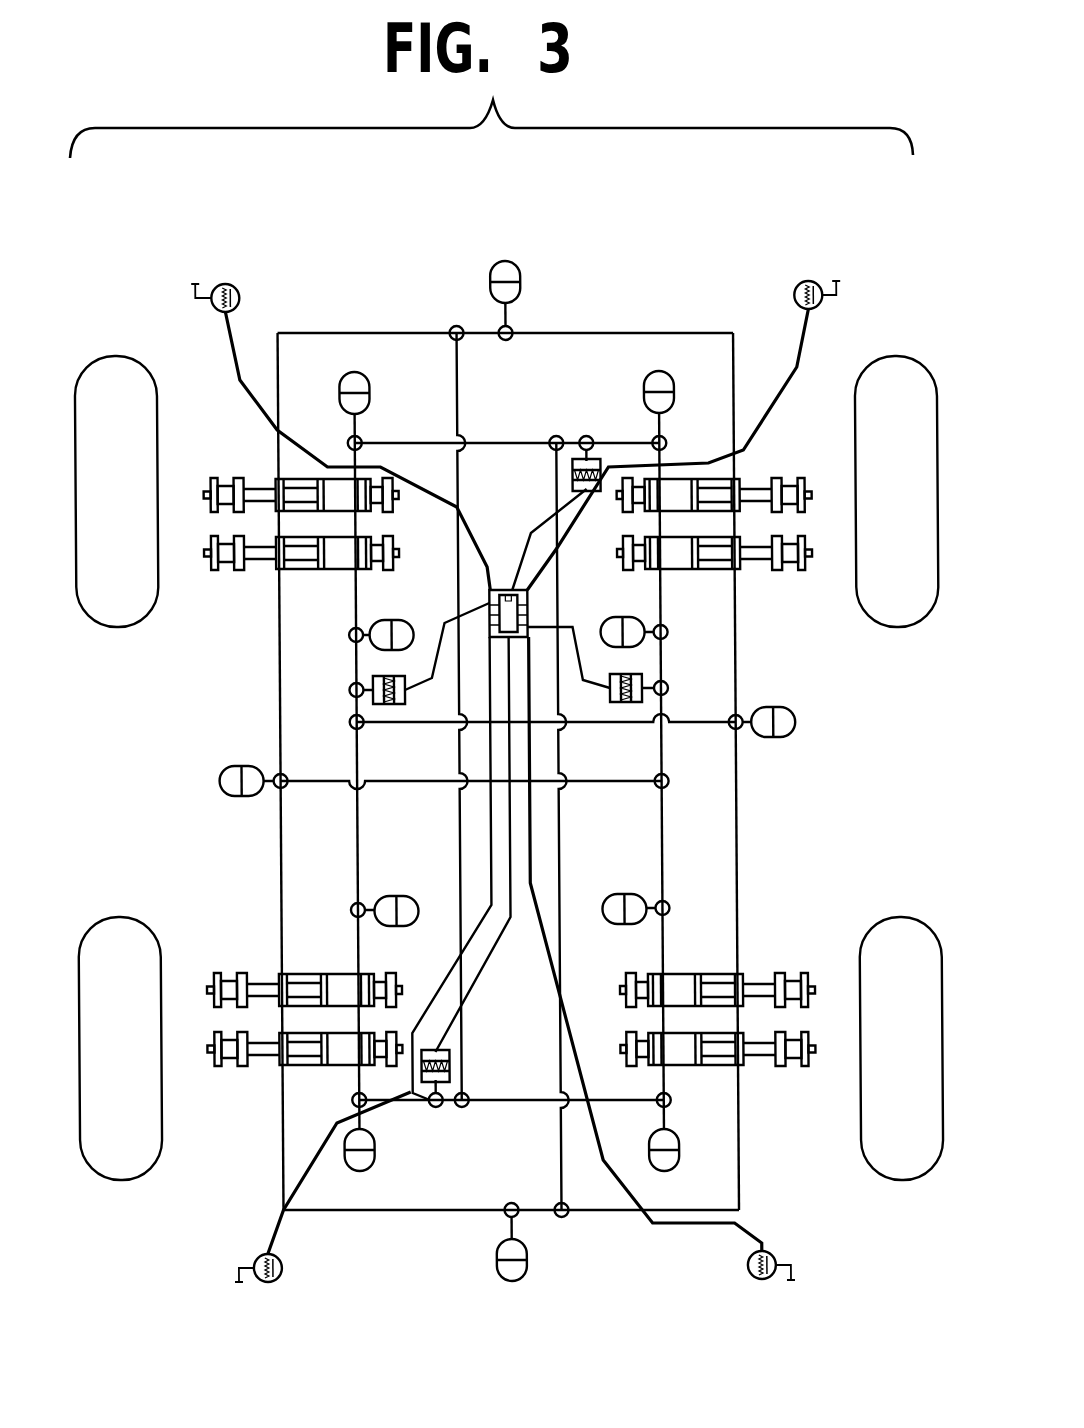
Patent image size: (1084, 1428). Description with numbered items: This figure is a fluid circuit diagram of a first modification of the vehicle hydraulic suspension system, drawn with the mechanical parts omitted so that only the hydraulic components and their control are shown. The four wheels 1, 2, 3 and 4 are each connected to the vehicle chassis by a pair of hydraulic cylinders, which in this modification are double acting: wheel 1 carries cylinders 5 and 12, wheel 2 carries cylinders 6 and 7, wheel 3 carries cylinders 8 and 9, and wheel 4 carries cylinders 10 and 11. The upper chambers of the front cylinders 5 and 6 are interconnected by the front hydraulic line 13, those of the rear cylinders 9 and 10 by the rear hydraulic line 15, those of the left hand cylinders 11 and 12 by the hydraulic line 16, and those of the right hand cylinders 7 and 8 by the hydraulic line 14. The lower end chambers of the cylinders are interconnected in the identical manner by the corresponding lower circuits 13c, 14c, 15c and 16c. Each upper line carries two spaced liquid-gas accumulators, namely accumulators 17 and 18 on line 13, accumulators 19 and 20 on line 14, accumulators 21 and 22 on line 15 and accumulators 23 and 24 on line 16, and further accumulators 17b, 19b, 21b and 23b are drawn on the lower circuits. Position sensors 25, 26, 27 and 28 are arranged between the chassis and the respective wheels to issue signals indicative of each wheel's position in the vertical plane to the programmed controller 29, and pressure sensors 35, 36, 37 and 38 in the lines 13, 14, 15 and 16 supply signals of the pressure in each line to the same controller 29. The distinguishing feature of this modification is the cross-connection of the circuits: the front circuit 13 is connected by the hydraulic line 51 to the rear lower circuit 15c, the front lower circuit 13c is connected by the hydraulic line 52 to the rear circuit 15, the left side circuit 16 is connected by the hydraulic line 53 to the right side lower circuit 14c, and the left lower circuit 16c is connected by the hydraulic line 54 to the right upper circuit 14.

The wheel 1 is at (122, 356).
The wheel 2 is at (887, 356).
The wheel 3 is at (888, 917).
The wheel 4 is at (135, 1180).
The hydraulic cylinder 5 is at (282, 478).
The hydraulic cylinder 6 is at (723, 479).
The hydraulic cylinder 7 is at (718, 569).
The hydraulic cylinder 8 is at (711, 974).
The hydraulic cylinder 9 is at (716, 1065).
The hydraulic cylinder 10 is at (324, 1066).
The hydraulic cylinder 11 is at (296, 974).
The hydraulic cylinder 12 is at (303, 570).
The hydraulic line 13 is at (520, 443).
The hydraulic circuit 13c is at (397, 333).
The hydraulic line 14 is at (666, 846).
The hydraulic circuit 14c is at (740, 803).
The hydraulic line 15 is at (607, 1098).
The hydraulic circuit 15c is at (559, 1217).
The hydraulic line 16 is at (354, 885).
The hydraulic circuit 16c is at (277, 848).
The hydraulic accumulator 17 is at (350, 372).
The accumulator 17b is at (506, 261).
The hydraulic accumulator 18 is at (662, 371).
The hydraulic accumulator 19 is at (640, 615).
The accumulator 19b is at (795, 737).
The hydraulic accumulator 20 is at (637, 893).
The hydraulic accumulator 21 is at (675, 1137).
The accumulator 21b is at (494, 1280).
The hydraulic accumulator 22 is at (362, 1172).
The hydraulic accumulator 23 is at (382, 926).
The accumulator 23b is at (229, 797).
The hydraulic accumulator 24 is at (377, 648).
The position sensor 25 is at (220, 284).
The position sensor 26 is at (815, 282).
The position sensor 27 is at (762, 1278).
The position sensor 28 is at (258, 1283).
The programmed controller 29 is at (540, 627).
The pressure sensor 35 is at (590, 458).
The pressure sensor 36 is at (641, 702).
The pressure sensor 37 is at (446, 1073).
The pressure sensor 38 is at (371, 704).
The hydraulic line 51 is at (554, 953).
The hydraulic line 52 is at (453, 862).
The hydraulic line 53 is at (451, 723).
The hydraulic line 54 is at (456, 781).